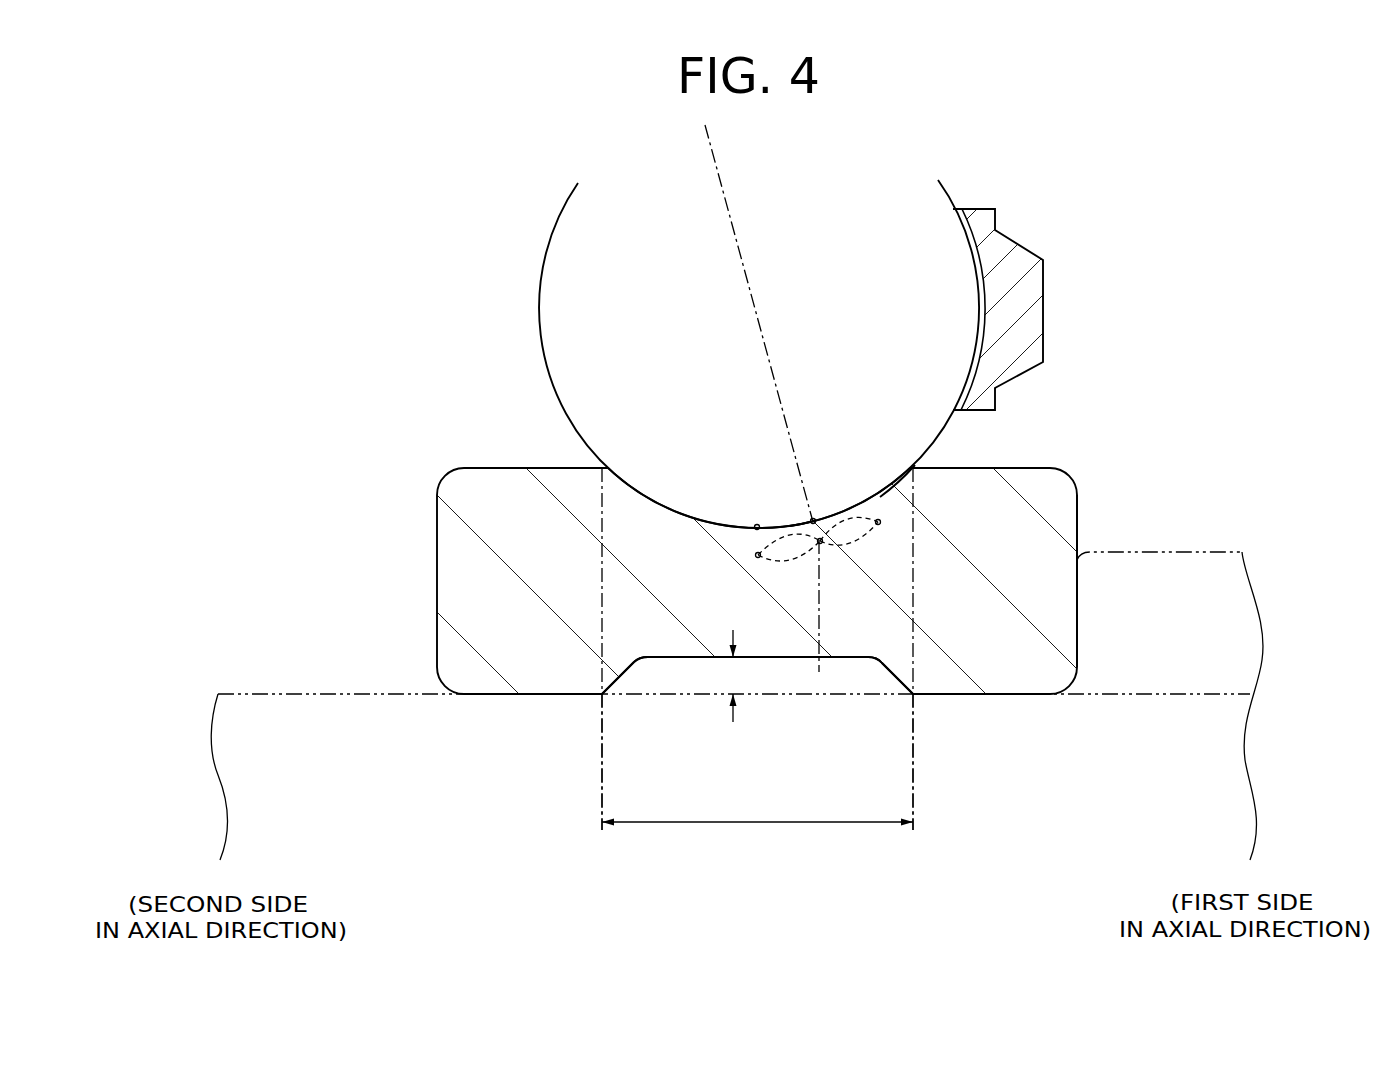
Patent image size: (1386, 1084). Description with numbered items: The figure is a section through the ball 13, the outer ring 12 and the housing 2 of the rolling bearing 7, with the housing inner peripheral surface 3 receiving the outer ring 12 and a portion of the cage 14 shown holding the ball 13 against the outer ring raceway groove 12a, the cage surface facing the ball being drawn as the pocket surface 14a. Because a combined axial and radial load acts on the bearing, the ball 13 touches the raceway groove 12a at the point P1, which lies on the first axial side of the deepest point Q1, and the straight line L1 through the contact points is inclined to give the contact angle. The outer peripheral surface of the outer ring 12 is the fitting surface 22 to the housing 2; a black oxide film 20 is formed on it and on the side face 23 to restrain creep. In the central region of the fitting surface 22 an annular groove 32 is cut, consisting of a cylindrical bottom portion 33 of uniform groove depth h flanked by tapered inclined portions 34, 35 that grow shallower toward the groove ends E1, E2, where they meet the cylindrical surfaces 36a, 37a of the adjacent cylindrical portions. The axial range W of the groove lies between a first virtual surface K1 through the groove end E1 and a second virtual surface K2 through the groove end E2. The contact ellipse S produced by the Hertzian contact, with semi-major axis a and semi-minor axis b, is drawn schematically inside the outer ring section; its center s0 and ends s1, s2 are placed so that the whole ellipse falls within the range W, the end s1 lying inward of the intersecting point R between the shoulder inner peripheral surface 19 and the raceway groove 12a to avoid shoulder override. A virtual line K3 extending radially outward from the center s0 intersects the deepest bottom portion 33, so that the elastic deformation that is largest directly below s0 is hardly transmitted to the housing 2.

The housing 2 is at (268, 692).
The inner peripheral surface 3 is at (355, 692).
The rolling bearing 7 is at (994, 190).
The outer ring 12 is at (1078, 517).
The outer ring raceway groove 12a is at (655, 502).
The ball 13 is at (539, 310).
The cage 14 is at (1045, 289).
The pocket surface 14a is at (1020, 315).
The shoulder inner peripheral surface 19 is at (1037, 468).
The black oxide film 20 is at (557, 696).
The fitting surface 22 is at (949, 697).
The side face 23 is at (1077, 650).
The annular groove 32 is at (784, 660).
The bottom portion 33 is at (703, 658).
The inclined portion 34 is at (893, 673).
The inclined portion 35 is at (622, 673).
The cylindrical surface 36a is at (983, 696).
The cylindrical surface 37a is at (530, 696).
The straight line L1 is at (737, 245).
The first virtual surface K1 is at (913, 560).
The second virtual surface K2 is at (602, 556).
The virtual line K3 is at (820, 633).
The groove end E1 is at (893, 762).
The groove end E2 is at (620, 762).
The contact point P1 is at (813, 523).
The deepest point Q1 is at (757, 526).
The intersecting point R is at (903, 472).
The center of contact ellipse s0 is at (800, 527).
The end of contact ellipse s1 is at (879, 522).
The end of contact ellipse s2 is at (758, 555).
The contact ellipse S is at (791, 566).
The semi-major axis a is at (868, 537).
The semi-minor axis b is at (826, 545).
The groove depth h is at (741, 689).
The axial range W is at (757, 838).